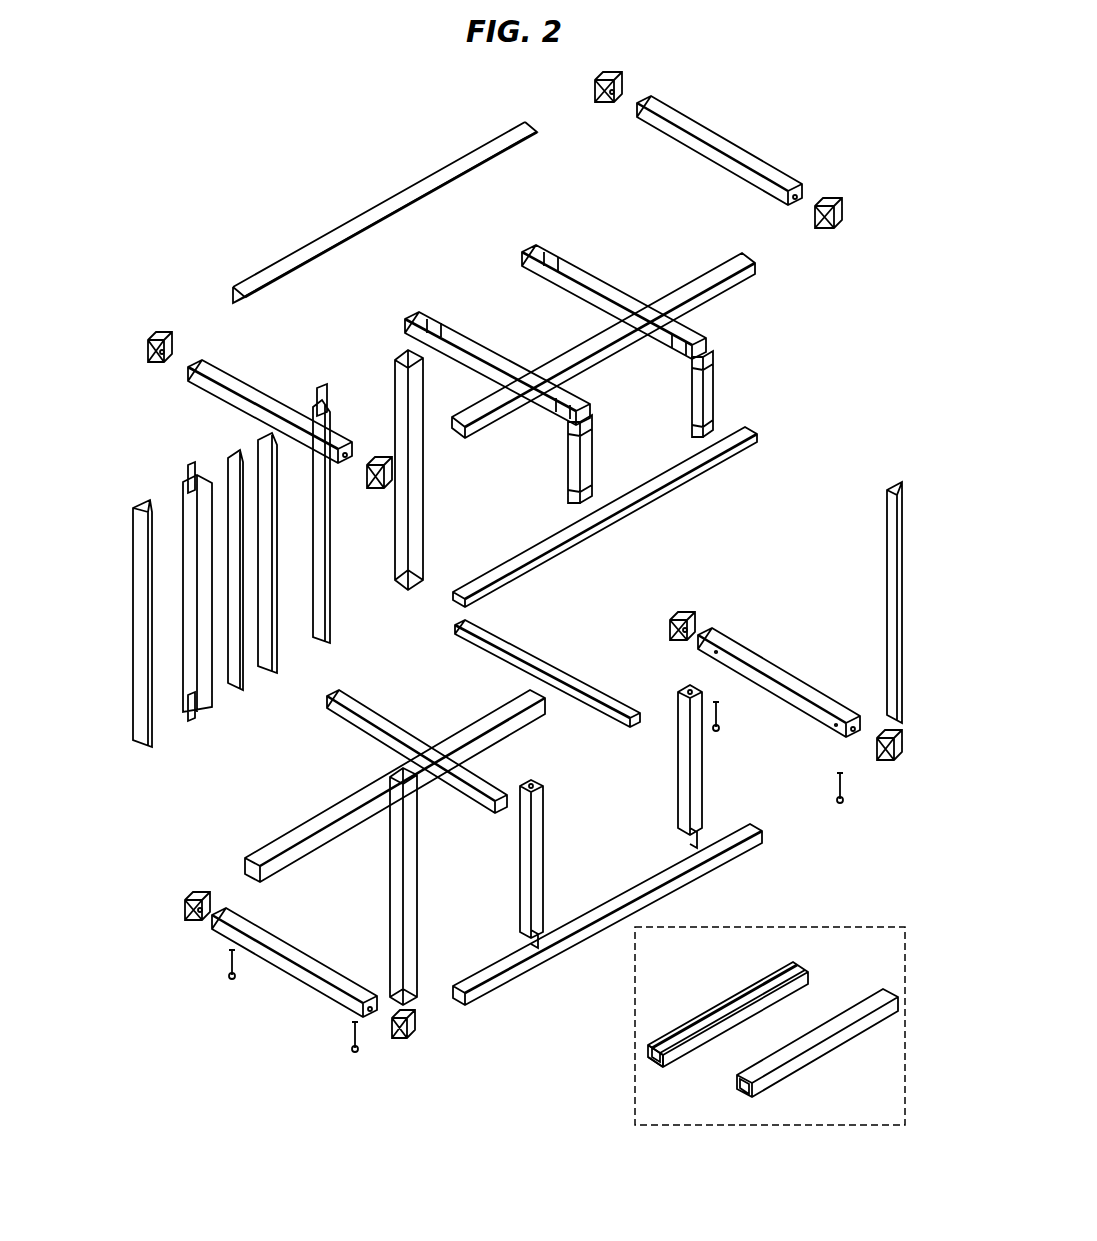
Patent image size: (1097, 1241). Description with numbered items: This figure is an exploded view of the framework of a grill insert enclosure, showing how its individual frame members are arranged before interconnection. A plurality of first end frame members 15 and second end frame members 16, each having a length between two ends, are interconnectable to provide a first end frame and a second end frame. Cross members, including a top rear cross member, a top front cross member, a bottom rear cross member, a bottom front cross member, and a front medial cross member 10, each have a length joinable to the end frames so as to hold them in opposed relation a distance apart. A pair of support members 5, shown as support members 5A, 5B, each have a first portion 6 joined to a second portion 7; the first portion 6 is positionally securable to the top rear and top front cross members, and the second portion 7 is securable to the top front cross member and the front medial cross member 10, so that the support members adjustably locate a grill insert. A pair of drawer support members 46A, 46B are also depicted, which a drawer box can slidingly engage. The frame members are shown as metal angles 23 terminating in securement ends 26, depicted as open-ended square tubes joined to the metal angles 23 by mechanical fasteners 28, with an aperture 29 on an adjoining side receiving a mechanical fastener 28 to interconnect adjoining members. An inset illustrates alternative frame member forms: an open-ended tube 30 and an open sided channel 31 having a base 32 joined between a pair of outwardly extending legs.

The support member 5 is at (446, 320).
The first support member 5A is at (489, 359).
The second support member 5B is at (609, 291).
The first portion 6 is at (587, 272).
The second portion 7 is at (713, 395).
The front medial cross member 10 is at (668, 497).
The first end frame member 15 is at (212, 390).
The second end frame member 16 is at (700, 130).
The metal angle 23 is at (318, 645).
The securement end 26 is at (833, 200).
The mechanical fastener 28 is at (229, 980).
The aperture 29 is at (622, 92).
The open-ended tube 30 is at (896, 985).
The open sided channel 31 is at (826, 965).
The base 32 is at (651, 1068).
The first drawer support member 46A is at (382, 710).
The second drawer support member 46B is at (517, 642).